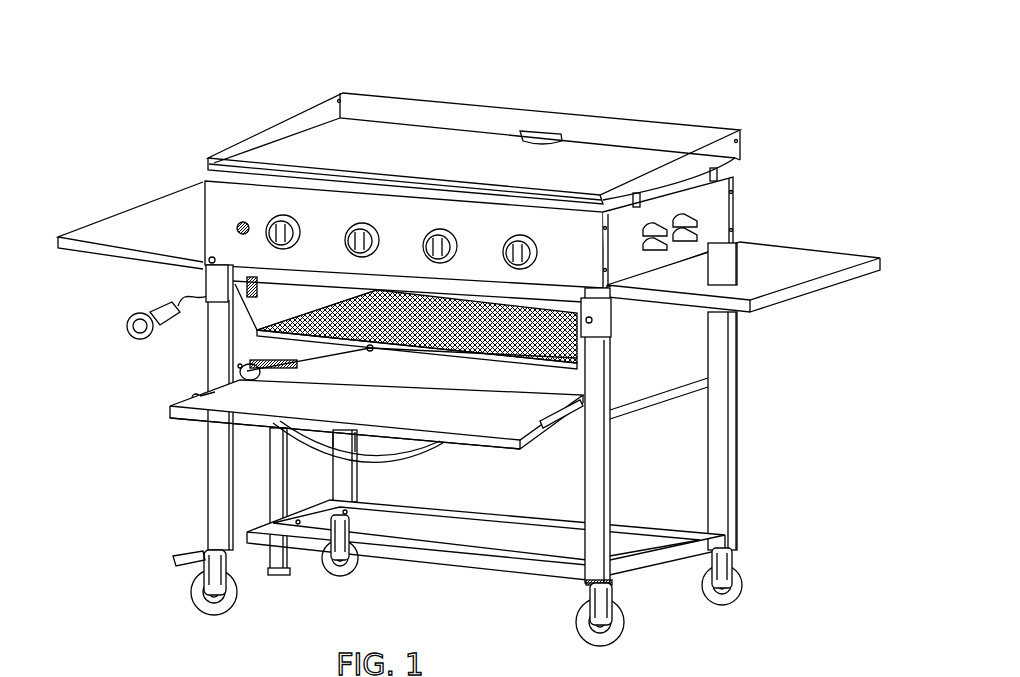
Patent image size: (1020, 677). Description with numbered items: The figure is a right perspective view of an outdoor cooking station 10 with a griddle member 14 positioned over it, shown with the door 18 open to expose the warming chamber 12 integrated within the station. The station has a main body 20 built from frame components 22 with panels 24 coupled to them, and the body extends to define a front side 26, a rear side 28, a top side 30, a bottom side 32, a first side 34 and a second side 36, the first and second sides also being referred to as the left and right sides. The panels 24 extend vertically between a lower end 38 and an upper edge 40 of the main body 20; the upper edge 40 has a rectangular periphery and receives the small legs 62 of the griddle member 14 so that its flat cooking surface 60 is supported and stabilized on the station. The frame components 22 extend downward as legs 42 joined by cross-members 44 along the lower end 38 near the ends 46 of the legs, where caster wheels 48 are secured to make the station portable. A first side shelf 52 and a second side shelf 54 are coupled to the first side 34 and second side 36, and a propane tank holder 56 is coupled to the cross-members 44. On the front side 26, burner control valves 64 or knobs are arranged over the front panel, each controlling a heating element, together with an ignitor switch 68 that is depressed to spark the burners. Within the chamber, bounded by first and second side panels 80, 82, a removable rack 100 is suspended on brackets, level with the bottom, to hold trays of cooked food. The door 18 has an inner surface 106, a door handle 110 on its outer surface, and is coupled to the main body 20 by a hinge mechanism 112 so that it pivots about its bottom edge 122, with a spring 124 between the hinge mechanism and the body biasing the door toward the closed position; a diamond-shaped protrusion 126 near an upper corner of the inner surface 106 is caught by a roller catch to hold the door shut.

The outdoor cooking station 10 is at (485, 345).
The warming chamber 12 is at (402, 360).
The griddle member 14 is at (431, 112).
The door 18 is at (486, 516).
The main body 20 is at (746, 203).
The frame components 22 is at (620, 325).
The panels 24 is at (697, 348).
The front side 26 is at (329, 416).
The rear side 28 is at (716, 189).
The top side 30 is at (415, 158).
The bottom side 32 is at (553, 461).
The first side 34 is at (195, 203).
The second side 36 is at (750, 226).
The lower end 38 is at (637, 429).
The upper edge 40 is at (211, 172).
The legs 42 is at (218, 488).
The cross-members 44 is at (659, 505).
The ends 46 is at (582, 586).
The caster wheels 48 is at (599, 627).
The first side shelf 52 is at (130, 210).
The second side shelf 54 is at (840, 254).
The propane tank holder 56 is at (273, 490).
The cooking surface 60 is at (305, 145).
The small legs 62 is at (737, 170).
The burner control valves 64 is at (297, 236).
The ignitor switch 68 is at (234, 231).
The first side panel 80 is at (305, 353).
The second side panel 82 is at (692, 367).
The removable rack 100 is at (376, 403).
The inner surface 106 is at (495, 418).
The door handle 110 is at (370, 462).
The hinge mechanism 112 is at (221, 395).
The bottom edge 122 is at (440, 400).
The spring 124 is at (255, 362).
The protrusion 126 is at (200, 392).